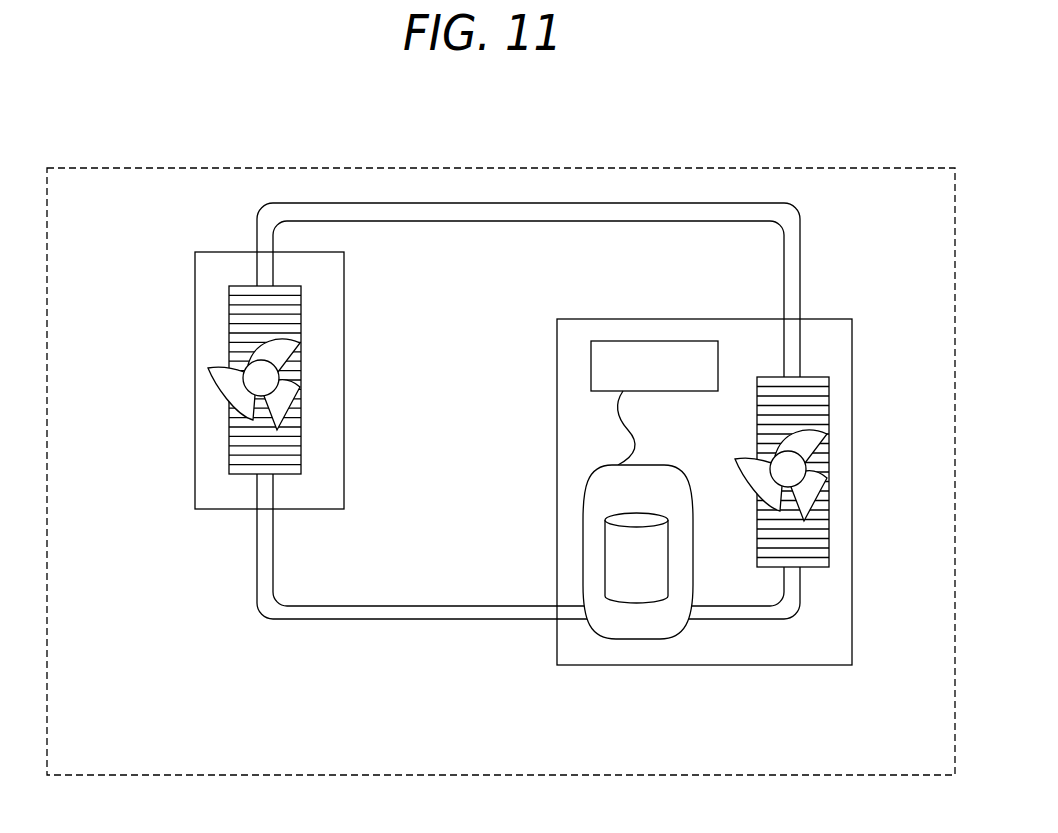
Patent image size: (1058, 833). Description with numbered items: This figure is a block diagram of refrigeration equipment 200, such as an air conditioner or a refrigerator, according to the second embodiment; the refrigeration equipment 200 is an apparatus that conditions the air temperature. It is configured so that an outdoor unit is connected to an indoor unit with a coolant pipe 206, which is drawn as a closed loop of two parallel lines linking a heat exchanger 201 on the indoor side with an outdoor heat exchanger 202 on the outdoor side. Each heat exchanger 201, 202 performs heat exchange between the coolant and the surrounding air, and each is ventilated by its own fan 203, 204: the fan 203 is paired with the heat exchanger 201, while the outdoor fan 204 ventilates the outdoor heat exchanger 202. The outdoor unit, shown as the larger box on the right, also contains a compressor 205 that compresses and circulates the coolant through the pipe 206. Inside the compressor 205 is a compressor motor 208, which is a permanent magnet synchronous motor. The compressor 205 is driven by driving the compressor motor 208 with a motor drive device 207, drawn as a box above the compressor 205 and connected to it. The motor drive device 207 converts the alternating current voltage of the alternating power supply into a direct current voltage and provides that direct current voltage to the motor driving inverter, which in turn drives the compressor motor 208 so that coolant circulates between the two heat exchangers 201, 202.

The refrigeration equipment 200 is at (663, 168).
The heat exchanger 201 is at (230, 312).
The outdoor heat exchanger 202 is at (827, 375).
The fan 203 is at (225, 395).
The outdoor fan 204 is at (815, 490).
The compressor 205 is at (620, 630).
The coolant pipe 206 is at (352, 622).
The motor drive device 207 is at (591, 365).
The compressor motor 208 is at (605, 540).